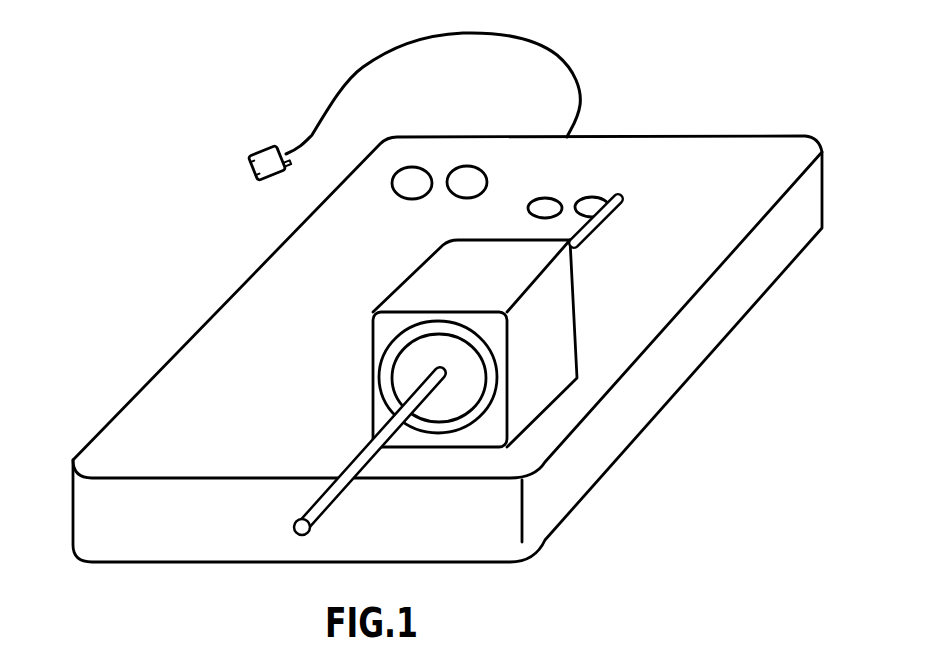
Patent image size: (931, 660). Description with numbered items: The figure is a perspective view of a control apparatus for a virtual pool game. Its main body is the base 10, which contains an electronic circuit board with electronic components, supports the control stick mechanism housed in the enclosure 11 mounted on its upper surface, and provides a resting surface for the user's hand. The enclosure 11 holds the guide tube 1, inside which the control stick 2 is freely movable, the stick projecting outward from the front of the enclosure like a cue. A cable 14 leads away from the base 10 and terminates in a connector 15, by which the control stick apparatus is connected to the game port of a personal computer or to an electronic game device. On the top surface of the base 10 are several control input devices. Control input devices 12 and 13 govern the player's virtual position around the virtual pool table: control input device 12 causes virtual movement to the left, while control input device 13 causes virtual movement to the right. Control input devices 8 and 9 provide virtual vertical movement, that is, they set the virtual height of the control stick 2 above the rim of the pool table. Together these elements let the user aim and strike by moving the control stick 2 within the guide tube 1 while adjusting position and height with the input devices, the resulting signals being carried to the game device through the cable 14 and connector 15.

The guide tube 1 is at (403, 410).
The control stick 2 is at (322, 506).
The control input device 8 is at (545, 198).
The control input device 9 is at (592, 198).
The base 10 is at (237, 312).
The enclosure 11 is at (427, 283).
The control input device 12 is at (412, 177).
The control input device 13 is at (469, 176).
The cable 14 is at (563, 53).
The connector 15 is at (262, 152).